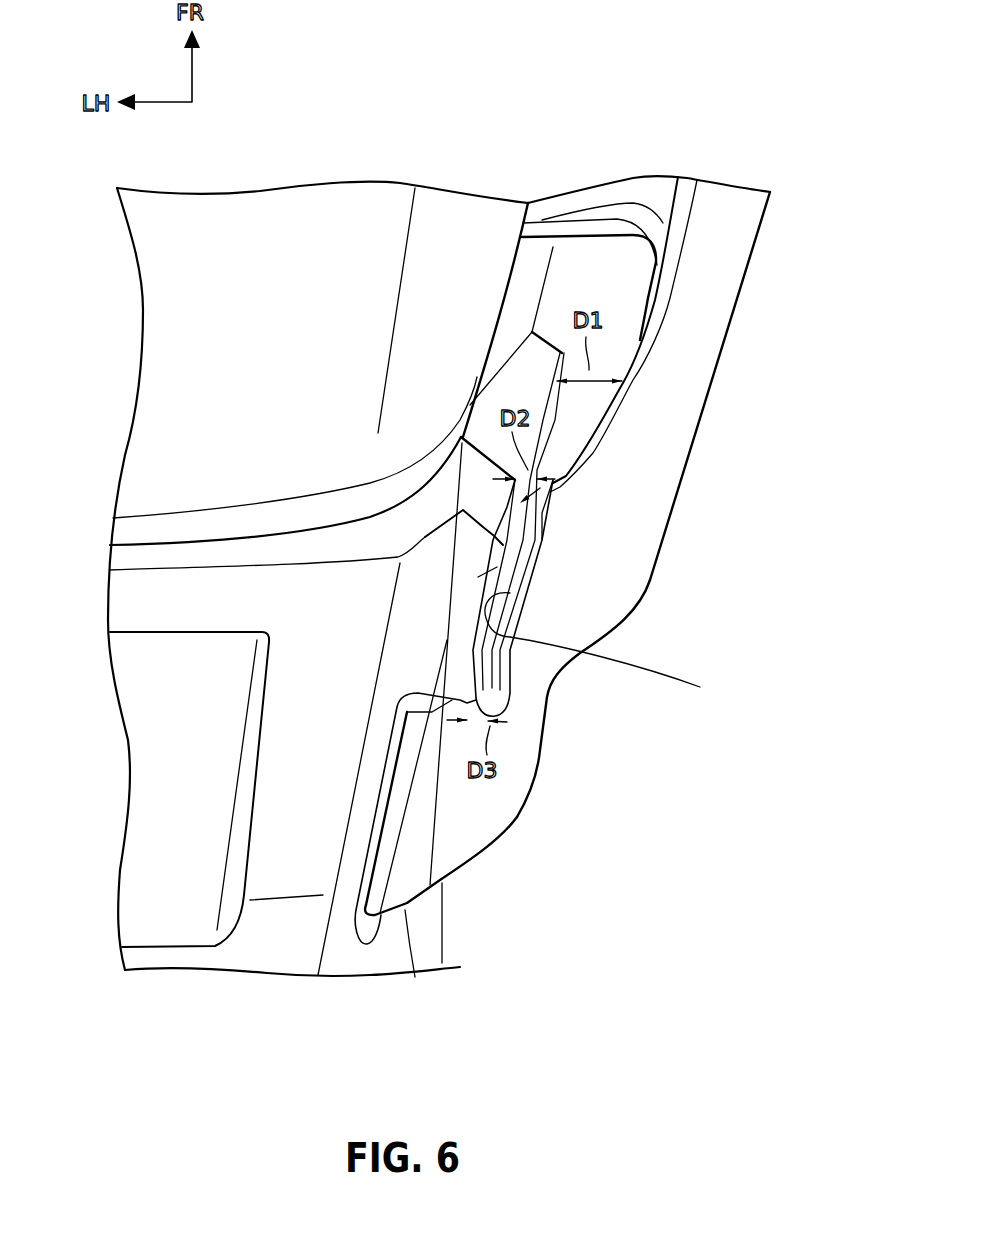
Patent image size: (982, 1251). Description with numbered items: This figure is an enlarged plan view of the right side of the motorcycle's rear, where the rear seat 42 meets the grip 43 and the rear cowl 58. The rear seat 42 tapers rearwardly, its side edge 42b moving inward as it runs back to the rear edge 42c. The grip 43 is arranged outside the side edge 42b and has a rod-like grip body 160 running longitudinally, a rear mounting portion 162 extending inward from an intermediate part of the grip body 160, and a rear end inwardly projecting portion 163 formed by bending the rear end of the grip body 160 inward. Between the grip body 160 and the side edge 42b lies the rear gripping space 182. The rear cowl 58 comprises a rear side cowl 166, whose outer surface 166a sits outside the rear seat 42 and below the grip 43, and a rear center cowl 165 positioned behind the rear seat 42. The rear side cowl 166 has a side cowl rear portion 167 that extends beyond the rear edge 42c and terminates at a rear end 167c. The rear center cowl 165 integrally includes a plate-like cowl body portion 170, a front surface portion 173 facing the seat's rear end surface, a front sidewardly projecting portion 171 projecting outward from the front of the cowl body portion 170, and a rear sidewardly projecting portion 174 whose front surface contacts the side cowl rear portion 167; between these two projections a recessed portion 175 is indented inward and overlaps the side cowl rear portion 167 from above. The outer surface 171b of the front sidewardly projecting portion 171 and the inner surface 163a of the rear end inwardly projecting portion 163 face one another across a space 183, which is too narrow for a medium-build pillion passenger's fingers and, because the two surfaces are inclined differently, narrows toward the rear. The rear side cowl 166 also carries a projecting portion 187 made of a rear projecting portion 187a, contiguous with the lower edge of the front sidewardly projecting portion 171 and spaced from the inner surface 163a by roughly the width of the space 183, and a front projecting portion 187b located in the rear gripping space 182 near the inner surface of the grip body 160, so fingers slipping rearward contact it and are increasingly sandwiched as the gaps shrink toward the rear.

The rear seat 42 is at (253, 225).
The side edge 42b is at (510, 282).
The rear edge 42c is at (158, 545).
The grip 43 is at (716, 392).
The rear cowl 58 is at (552, 770).
The grip body 160 is at (707, 308).
The rear mounting portion 162 is at (631, 190).
The rear end inwardly projecting portion 163 is at (583, 600).
The inner surface 163a is at (619, 649).
The rear center cowl 165 is at (244, 972).
The rear side cowl 166 is at (565, 725).
The outer surface 166a is at (623, 323).
The side cowl rear portion 167 is at (460, 853).
The rear end 167c is at (405, 907).
The cowl body portion 170 is at (178, 912).
The front sidewardly projecting portion 171 is at (507, 580).
The outer surface 171b is at (507, 553).
The front surface portion 173 is at (238, 552).
The rear sidewardly projecting portion 174 is at (372, 960).
The recessed portion 175 is at (390, 797).
The rear gripping space 182 is at (603, 355).
The space 183 is at (565, 490).
The projecting portion 187 is at (570, 427).
The rear projecting portion 187a is at (586, 601).
The front projecting portion 187b is at (518, 380).